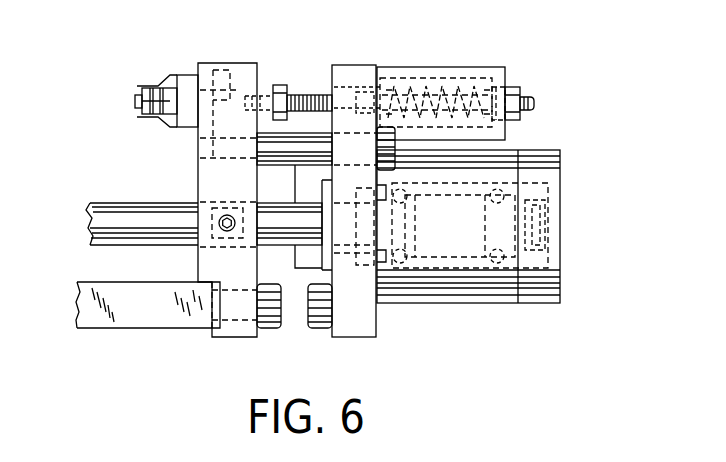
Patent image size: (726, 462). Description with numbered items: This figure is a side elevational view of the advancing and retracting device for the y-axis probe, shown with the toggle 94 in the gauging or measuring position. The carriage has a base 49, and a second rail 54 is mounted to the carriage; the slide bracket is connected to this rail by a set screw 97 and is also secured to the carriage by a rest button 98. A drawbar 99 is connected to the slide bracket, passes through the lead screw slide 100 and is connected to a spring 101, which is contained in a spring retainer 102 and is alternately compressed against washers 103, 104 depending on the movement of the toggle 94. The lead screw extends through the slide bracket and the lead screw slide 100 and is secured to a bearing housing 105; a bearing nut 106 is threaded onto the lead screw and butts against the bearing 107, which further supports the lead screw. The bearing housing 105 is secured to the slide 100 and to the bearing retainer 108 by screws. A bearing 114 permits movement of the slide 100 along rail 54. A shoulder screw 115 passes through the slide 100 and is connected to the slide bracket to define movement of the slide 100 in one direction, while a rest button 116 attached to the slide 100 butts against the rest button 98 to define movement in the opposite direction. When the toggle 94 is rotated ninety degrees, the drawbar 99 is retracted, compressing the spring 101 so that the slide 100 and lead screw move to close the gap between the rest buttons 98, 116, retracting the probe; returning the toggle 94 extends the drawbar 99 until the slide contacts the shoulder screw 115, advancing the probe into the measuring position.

The base 49 is at (132, 322).
The second rail 54 is at (112, 237).
The toggle 94 is at (135, 101).
The set screw 97 is at (224, 214).
The rest button 98 is at (272, 330).
The drawbar 99 is at (294, 95).
The lead screw slide 100 is at (377, 320).
The spring 101 is at (432, 84).
The spring retainer 102 is at (478, 66).
The washer 103 is at (401, 82).
The washer 104 is at (495, 86).
The bearing housing 105 is at (497, 152).
The bearing nut 106 is at (545, 200).
The bearing 107 is at (497, 263).
The bearing retainer 108 is at (542, 303).
The bearing 114 is at (232, 330).
The shoulder screw 115 is at (300, 138).
The rest button 116 is at (317, 330).